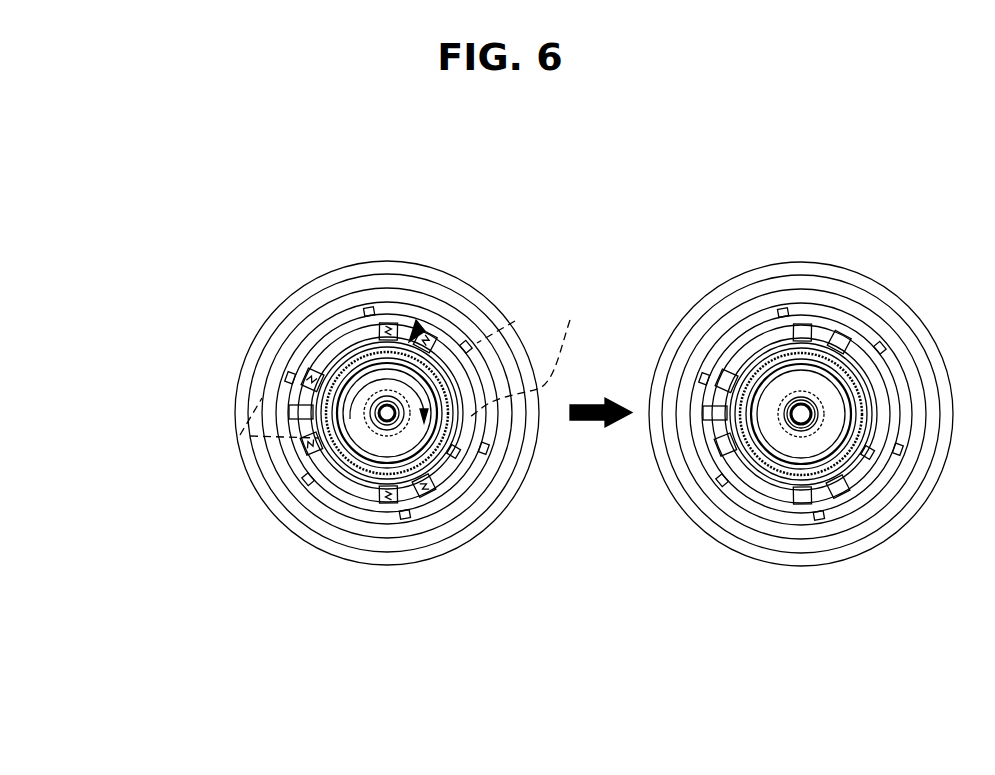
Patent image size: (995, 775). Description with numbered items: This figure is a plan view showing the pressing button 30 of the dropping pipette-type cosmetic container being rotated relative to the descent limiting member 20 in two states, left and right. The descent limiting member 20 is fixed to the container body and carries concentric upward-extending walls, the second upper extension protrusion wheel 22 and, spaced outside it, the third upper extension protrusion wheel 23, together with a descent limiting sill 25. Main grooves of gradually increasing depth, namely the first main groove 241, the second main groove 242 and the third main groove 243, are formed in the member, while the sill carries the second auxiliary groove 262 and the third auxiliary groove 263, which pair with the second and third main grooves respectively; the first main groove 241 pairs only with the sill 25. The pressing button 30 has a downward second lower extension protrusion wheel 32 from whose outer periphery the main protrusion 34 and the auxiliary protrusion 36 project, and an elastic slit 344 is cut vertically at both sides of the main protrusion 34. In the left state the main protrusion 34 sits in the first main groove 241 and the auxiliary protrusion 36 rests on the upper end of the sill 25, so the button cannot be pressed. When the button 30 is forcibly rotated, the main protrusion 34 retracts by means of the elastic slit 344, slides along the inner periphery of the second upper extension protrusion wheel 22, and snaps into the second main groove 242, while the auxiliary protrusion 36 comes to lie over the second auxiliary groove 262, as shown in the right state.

The descent limiting member 20 is at (228, 356).
The second upper extension protrusion wheel 22 is at (477, 433).
The third upper extension protrusion wheel 23 is at (510, 447).
The descent limiting sill 25 is at (453, 452).
The pressing button 30 is at (442, 322).
The second lower extension protrusion wheel 32 is at (428, 337).
The main protrusion 34 is at (250, 436).
The auxiliary protrusion 36 is at (515, 321).
The first main groove 241 is at (290, 409).
The second main groove 242 is at (462, 347).
The third main groove 243 is at (428, 492).
The second auxiliary groove 262 is at (313, 443).
The third auxiliary groove 263 is at (388, 330).
The elastic slit 344 is at (240, 435).